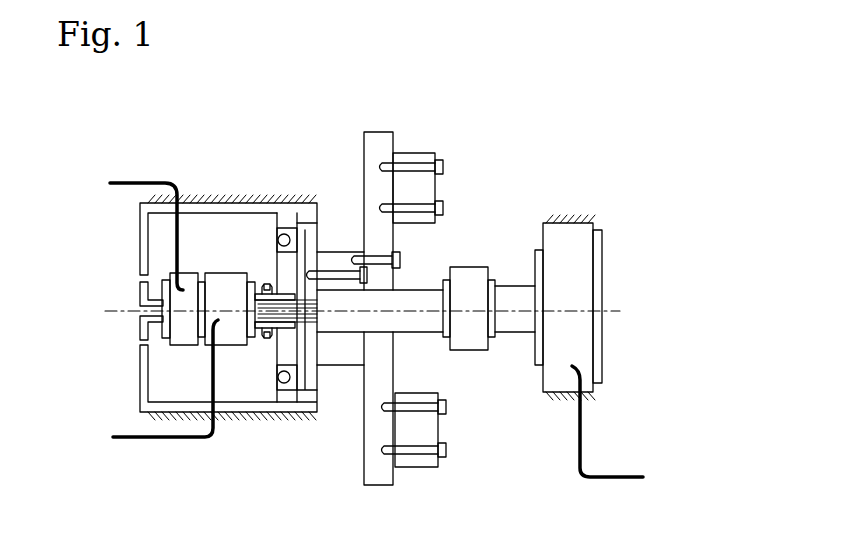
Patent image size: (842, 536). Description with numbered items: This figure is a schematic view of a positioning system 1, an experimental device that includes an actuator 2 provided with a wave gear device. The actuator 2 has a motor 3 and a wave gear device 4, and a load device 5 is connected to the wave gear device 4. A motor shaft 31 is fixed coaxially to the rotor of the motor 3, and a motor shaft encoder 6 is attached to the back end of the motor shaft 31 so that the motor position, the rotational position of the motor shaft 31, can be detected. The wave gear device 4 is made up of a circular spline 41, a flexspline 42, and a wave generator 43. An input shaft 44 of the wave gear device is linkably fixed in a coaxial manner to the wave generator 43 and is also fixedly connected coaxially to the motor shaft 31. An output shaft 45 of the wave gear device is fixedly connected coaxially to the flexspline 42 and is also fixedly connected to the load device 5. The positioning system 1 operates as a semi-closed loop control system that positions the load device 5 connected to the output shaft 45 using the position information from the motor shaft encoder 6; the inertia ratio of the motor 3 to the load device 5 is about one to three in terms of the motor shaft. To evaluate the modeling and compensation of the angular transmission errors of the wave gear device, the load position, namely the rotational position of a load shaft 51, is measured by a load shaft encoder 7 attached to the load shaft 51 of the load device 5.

The positioning system 1 is at (493, 90).
The actuator 2 is at (243, 127).
The motor 3 is at (200, 256).
The wave gear device 4 is at (257, 236).
The load device 5 is at (391, 116).
The motor shaft encoder 6 is at (171, 356).
The load shaft encoder 7 is at (616, 221).
The motor shaft 31 is at (145, 296).
The circular spline 41 is at (278, 405).
The flexspline 42 is at (308, 400).
The wave generator 43 is at (280, 332).
The input shaft 44 is at (268, 345).
The output shaft 45 is at (343, 358).
The load shaft 51 is at (420, 332).